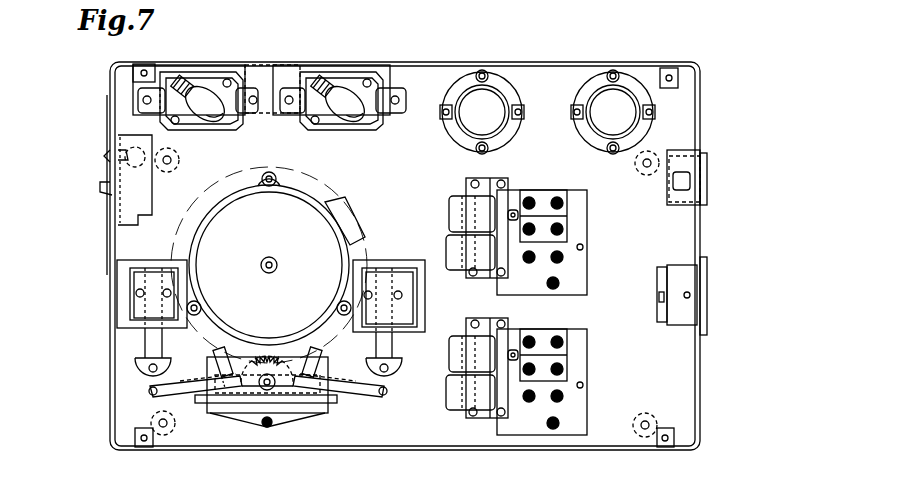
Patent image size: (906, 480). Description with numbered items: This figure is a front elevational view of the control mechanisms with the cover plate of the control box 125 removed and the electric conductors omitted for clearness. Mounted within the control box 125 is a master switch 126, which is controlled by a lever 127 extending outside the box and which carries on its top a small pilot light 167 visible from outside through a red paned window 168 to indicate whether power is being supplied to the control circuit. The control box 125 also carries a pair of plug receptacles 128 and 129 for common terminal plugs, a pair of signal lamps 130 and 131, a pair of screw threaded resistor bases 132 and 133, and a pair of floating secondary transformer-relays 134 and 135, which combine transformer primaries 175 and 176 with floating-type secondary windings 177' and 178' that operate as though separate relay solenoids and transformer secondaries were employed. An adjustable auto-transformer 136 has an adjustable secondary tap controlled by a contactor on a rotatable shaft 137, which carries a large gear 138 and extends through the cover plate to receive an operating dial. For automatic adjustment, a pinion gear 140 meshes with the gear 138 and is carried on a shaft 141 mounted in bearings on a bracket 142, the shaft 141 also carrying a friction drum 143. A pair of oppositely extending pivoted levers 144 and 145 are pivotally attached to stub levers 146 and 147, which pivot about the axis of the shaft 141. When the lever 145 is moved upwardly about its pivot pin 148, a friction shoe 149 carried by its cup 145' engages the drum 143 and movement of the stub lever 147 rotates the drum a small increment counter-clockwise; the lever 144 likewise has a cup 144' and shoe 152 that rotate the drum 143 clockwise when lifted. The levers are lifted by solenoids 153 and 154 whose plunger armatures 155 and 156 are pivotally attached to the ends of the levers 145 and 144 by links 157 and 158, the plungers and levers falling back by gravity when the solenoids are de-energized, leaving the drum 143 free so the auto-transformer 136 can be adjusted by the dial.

The control box 125 is at (714, 128).
The master switch 126 is at (130, 195).
The lever 127 is at (102, 188).
The plug receptacle 128 is at (707, 177).
The plug receptacle 129 is at (700, 283).
The signal lamp 130 is at (215, 113).
The signal lamp 131 is at (340, 116).
The screw threaded resistor base 132 is at (492, 108).
The screw threaded resistor base 133 is at (605, 113).
The floating secondary transformer-relay 134 is at (502, 182).
The floating secondary transformer-relay 135 is at (560, 324).
The adjustable auto-transformer 136 is at (374, 226).
The rotatable shaft 137 is at (270, 262).
The large gear 138 is at (265, 356).
The pinion gear 140 is at (278, 388).
The shaft 141 is at (268, 420).
The bracket 142 is at (215, 416).
The friction drum 143 is at (275, 356).
The pivoted lever 144 is at (195, 373).
The cup 144' is at (203, 358).
The pivoted lever 145 is at (340, 374).
The cup 145' is at (335, 358).
The stub lever 146 is at (230, 404).
The stub lever 147 is at (285, 392).
The pivot pin 148 is at (337, 398).
The friction shoe 149 is at (306, 372).
The friction shoe 152 is at (230, 372).
The solenoid 153 is at (396, 282).
The solenoid 154 is at (140, 280).
The plunger armature 155 is at (388, 345).
The plunger armature 156 is at (150, 345).
The link 157 is at (388, 388).
The link 158 is at (148, 388).
The pilot light 167 is at (122, 152).
The red paned window 168 is at (106, 156).
The transformer primary 175 is at (456, 262).
The transformer primary 176 is at (456, 400).
The floating secondary winding 177' is at (472, 220).
The floating secondary winding 178' is at (472, 360).